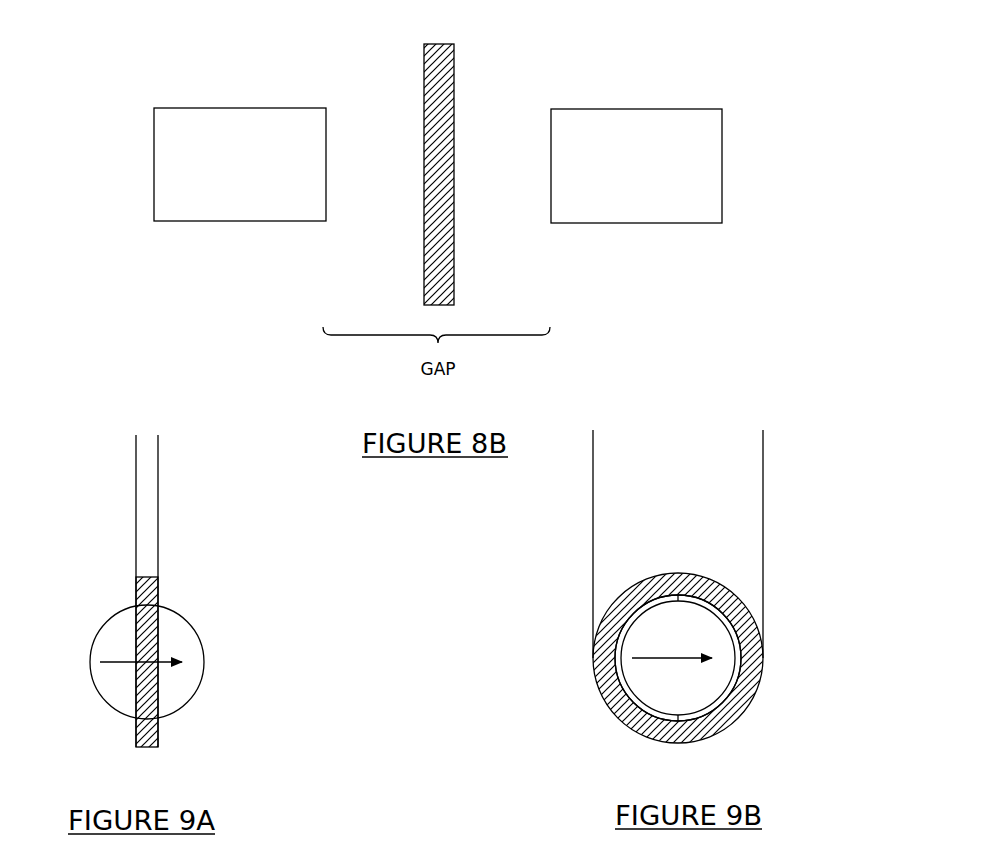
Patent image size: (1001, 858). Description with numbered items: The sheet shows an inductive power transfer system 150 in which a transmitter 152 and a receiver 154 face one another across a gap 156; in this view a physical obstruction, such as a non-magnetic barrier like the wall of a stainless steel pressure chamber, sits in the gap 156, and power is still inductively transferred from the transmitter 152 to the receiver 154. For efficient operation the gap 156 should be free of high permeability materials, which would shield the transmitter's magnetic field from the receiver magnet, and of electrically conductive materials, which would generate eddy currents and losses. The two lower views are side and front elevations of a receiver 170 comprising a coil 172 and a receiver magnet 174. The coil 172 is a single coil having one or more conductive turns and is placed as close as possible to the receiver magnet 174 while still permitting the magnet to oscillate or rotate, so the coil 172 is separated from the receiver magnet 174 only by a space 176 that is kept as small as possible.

In FIG. 8B, the inductive power transfer system 150 is at (343, 79).
In FIG. 8B, the transmitter 152 is at (166, 115).
In FIG. 8B, the receiver 154 is at (606, 119).
In FIG. 8B, the gap 156 is at (392, 203).
In FIG. 9A, the receiver 170 is at (200, 554).
In FIG. 9B, the receiver 170 is at (794, 571).
In FIG. 9A, the coil 172 is at (140, 590).
In FIG. 9B, the coil 172 is at (600, 668).
In FIG. 9A, the receiver magnet 174 is at (110, 636).
In FIG. 9B, the receiver magnet 174 is at (672, 617).
In FIG. 9B, the space 176 is at (625, 698).